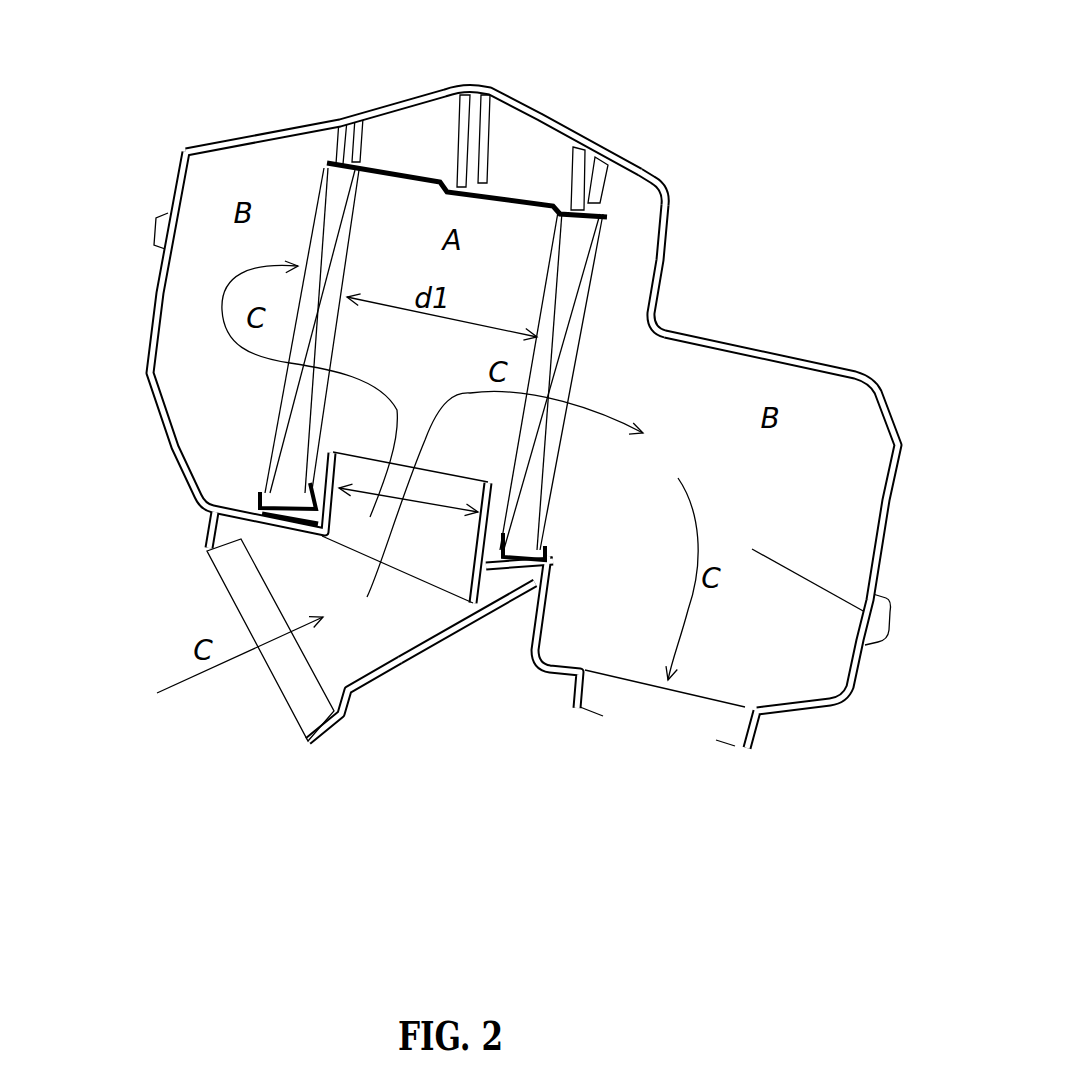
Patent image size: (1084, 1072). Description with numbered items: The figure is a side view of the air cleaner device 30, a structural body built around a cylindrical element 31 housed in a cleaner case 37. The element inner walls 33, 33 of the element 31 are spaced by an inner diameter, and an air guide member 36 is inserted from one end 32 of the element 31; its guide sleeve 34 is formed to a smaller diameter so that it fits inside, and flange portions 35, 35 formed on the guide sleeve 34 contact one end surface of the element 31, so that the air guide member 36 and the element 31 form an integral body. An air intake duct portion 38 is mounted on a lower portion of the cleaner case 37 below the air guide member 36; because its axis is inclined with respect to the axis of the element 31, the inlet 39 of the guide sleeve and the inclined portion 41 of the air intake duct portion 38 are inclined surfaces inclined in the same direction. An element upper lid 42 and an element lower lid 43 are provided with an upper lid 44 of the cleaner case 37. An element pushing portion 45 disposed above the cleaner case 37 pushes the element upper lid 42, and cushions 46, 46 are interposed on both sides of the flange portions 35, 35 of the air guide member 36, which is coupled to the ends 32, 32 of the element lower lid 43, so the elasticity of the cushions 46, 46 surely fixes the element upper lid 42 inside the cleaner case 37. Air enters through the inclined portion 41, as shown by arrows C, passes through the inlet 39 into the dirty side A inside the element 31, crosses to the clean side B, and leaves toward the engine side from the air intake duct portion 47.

The air cleaner device 30 is at (680, 117).
The cylindrical element 31 is at (600, 270).
The end of the element 32 is at (307, 489).
The element inner wall 33 is at (360, 243).
The guide sleeve 34 is at (495, 497).
The flange portion 35 is at (305, 530).
The air guide member 36 is at (440, 602).
The cleaner case 37 is at (772, 342).
The air intake duct portion 38 is at (328, 740).
The inlet of the guide sleeve 39 is at (413, 583).
The inclined portion 41 is at (281, 700).
The element upper lid 42 is at (526, 196).
The element lower lid 43 is at (260, 495).
The upper lid of the cleaner case 44 is at (276, 130).
The element pushing portion 45 is at (573, 172).
The cushion 46 is at (217, 534).
The air intake duct portion 47 is at (751, 738).